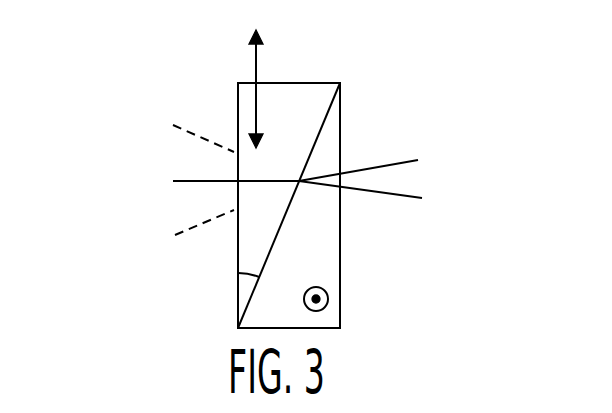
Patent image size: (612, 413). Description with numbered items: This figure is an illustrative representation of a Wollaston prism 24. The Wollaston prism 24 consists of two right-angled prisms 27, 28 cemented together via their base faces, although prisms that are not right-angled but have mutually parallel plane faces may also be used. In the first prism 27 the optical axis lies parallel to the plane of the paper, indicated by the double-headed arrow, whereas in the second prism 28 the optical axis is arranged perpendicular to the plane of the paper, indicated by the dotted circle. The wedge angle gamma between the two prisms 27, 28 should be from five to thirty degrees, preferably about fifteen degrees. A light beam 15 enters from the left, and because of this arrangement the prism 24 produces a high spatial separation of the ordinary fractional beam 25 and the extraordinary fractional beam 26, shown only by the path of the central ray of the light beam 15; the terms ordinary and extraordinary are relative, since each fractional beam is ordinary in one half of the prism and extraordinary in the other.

The light beam 15 is at (187, 189).
The Wollaston prism 24 is at (352, 114).
The ordinary fractional beam 25 is at (416, 160).
The extraordinary fractional beam 26 is at (416, 194).
The right-angled prism 27 is at (241, 246).
The right-angled prism 28 is at (336, 240).